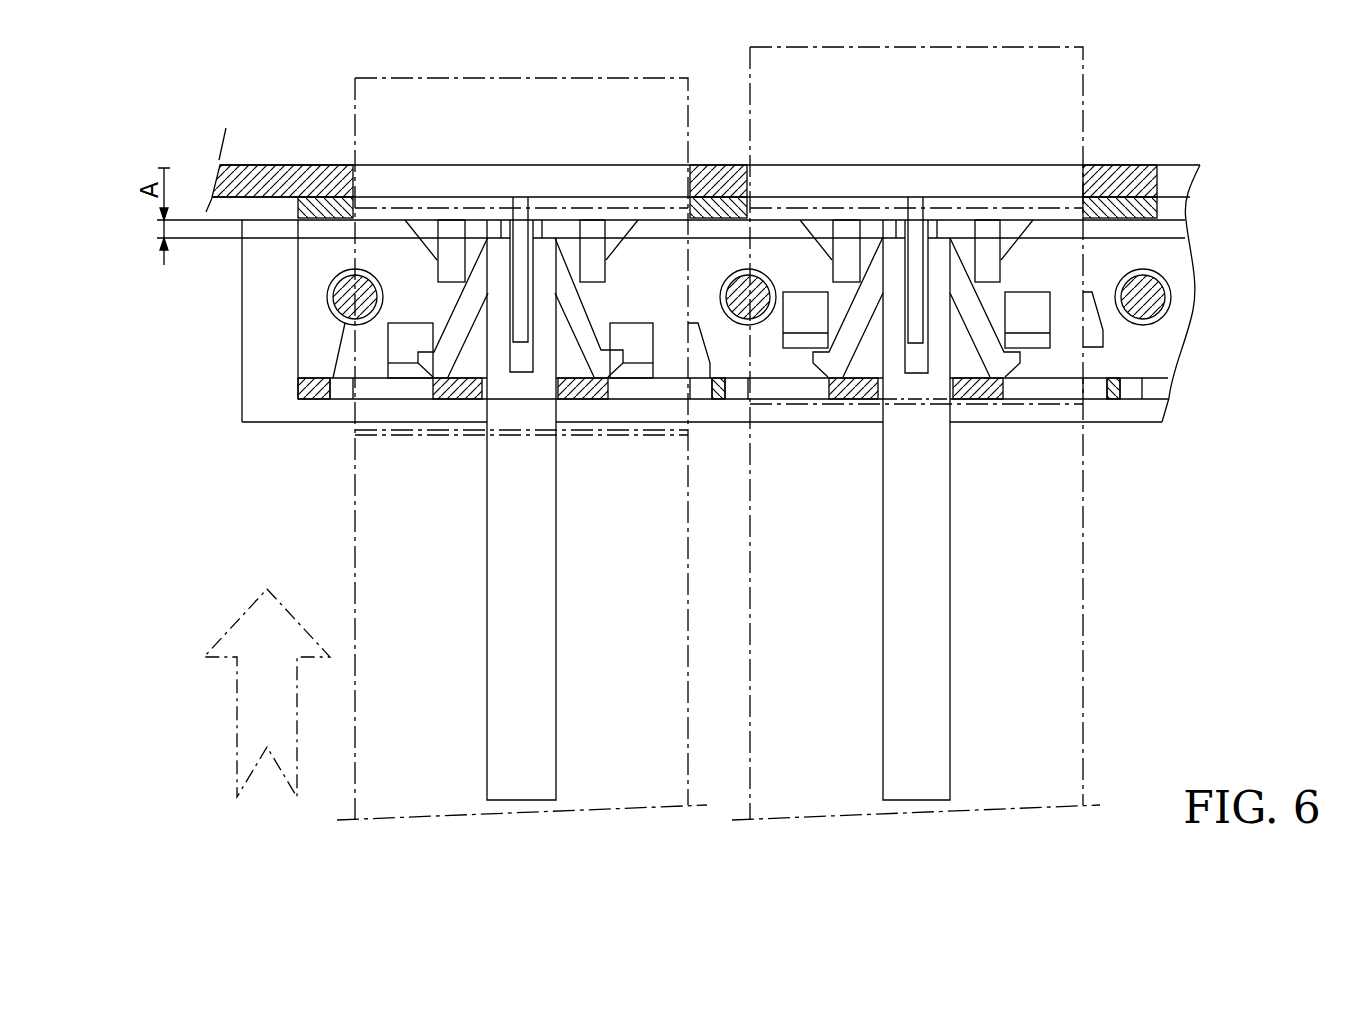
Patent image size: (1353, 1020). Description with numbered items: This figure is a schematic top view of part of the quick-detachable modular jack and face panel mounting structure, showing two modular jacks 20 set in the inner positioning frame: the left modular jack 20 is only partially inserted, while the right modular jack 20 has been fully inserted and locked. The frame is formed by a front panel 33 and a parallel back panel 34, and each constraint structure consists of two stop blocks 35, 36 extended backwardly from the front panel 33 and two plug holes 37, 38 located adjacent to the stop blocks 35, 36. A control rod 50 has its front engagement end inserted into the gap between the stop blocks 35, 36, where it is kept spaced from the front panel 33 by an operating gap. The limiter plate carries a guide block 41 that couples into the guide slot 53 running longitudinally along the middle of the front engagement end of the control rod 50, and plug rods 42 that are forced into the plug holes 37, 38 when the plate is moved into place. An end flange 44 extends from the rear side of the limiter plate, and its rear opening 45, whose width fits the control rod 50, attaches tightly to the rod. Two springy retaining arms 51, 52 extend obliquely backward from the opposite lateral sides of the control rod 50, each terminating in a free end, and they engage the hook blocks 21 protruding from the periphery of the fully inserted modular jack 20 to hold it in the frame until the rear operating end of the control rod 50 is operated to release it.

The modular jack 20 is at (652, 712).
The hook block 21 is at (633, 333).
The front panel 33 is at (316, 203).
The back panel 34 is at (298, 382).
The stop block 35 is at (453, 227).
The stop block 36 is at (597, 235).
The plug hole 37 is at (340, 316).
The plug hole 38 is at (737, 275).
The guide block 41 is at (520, 227).
The plug rod 42 is at (343, 293).
The end flange 44 is at (580, 395).
The rear opening 45 is at (483, 402).
The control rod 50 is at (512, 715).
The springy retaining arm 51 is at (440, 358).
The springy retaining arm 52 is at (600, 363).
The guide slot 53 is at (522, 373).